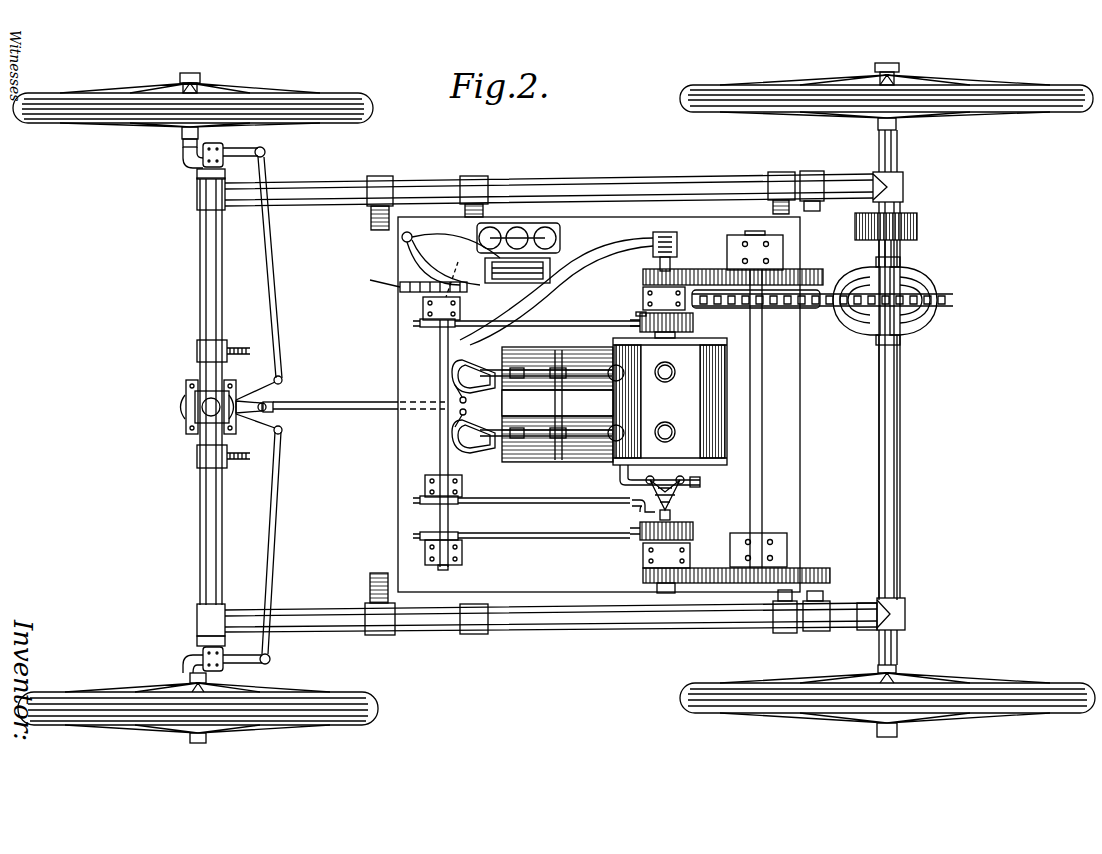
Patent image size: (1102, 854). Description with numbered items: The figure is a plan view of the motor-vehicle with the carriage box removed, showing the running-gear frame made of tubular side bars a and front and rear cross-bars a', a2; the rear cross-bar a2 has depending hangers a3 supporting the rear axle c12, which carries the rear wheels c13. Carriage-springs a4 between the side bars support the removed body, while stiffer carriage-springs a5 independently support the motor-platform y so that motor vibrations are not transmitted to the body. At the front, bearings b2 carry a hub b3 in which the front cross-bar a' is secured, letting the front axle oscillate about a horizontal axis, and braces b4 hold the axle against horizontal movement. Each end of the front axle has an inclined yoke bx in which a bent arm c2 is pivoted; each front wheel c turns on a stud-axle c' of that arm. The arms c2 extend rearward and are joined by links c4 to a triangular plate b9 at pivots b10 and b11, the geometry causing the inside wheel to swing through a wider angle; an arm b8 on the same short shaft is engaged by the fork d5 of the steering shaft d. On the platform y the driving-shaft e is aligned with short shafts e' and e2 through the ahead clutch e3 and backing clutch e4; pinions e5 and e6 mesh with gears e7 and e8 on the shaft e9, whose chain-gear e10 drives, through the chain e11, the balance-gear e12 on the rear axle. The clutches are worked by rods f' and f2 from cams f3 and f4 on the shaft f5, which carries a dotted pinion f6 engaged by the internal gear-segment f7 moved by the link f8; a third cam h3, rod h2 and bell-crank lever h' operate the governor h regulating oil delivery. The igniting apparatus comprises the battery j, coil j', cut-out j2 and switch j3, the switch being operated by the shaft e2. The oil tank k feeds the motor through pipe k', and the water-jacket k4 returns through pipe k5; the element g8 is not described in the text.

The side bars a is at (551, 402).
The front cross-bar a' is at (193, 407).
The rear cross-bar a2 is at (900, 495).
The hangers a3 is at (903, 186).
The carriage-springs a4 is at (370, 218).
The carriage-springs a5 is at (470, 180).
The yoke bx is at (196, 176).
The bearings b2 is at (236, 384).
The hub b3 is at (200, 404).
The braces b4 is at (248, 328).
The arm b8 is at (273, 410).
The triangular plate b9 is at (263, 398).
The pivot b10 is at (282, 434).
The pivot b11 is at (282, 376).
The front wheels c is at (195, 413).
The stud-axle c' is at (173, 378).
The bent arm c2 is at (258, 142).
The links c4 is at (272, 272).
The rear axle c12 is at (898, 150).
The rear wheels c13 is at (1020, 112).
The shaft d is at (368, 410).
The fork d5 is at (470, 612).
The driving-shaft e is at (675, 498).
The short shaft e' is at (666, 599).
The short shaft e2 is at (683, 264).
The ahead clutch e3 is at (726, 548).
The backing clutch e4 is at (640, 316).
The pinion e5 is at (650, 574).
The pinion e6 is at (645, 288).
The gear e7 is at (818, 566).
The gear e8 is at (815, 275).
The shaft e9 is at (762, 385).
The chain-gear e10 is at (810, 305).
The chain e11 is at (825, 290).
The balance-gear e12 is at (930, 322).
The rod f' is at (544, 548).
The rod f2 is at (582, 320).
The cam f3 is at (455, 531).
The cam f4 is at (432, 330).
The shaft f5 is at (440, 452).
The pinion f6 is at (449, 266).
The internal gear-segment f7 is at (384, 304).
The link f8 is at (405, 290).
The gear g8 is at (638, 322).
The governor h is at (551, 433).
The bell-crank lever h' is at (626, 512).
The rod h2 is at (570, 496).
The cam h3 is at (458, 500).
The battery j is at (527, 238).
The coil j' is at (517, 284).
The cut-out j2 is at (402, 238).
The switch j3 is at (677, 240).
The tank k is at (670, 401).
The pipe k' is at (677, 479).
The water-jacket k4 is at (545, 462).
The pipe k5 is at (555, 365).
The motor-platform y is at (599, 404).